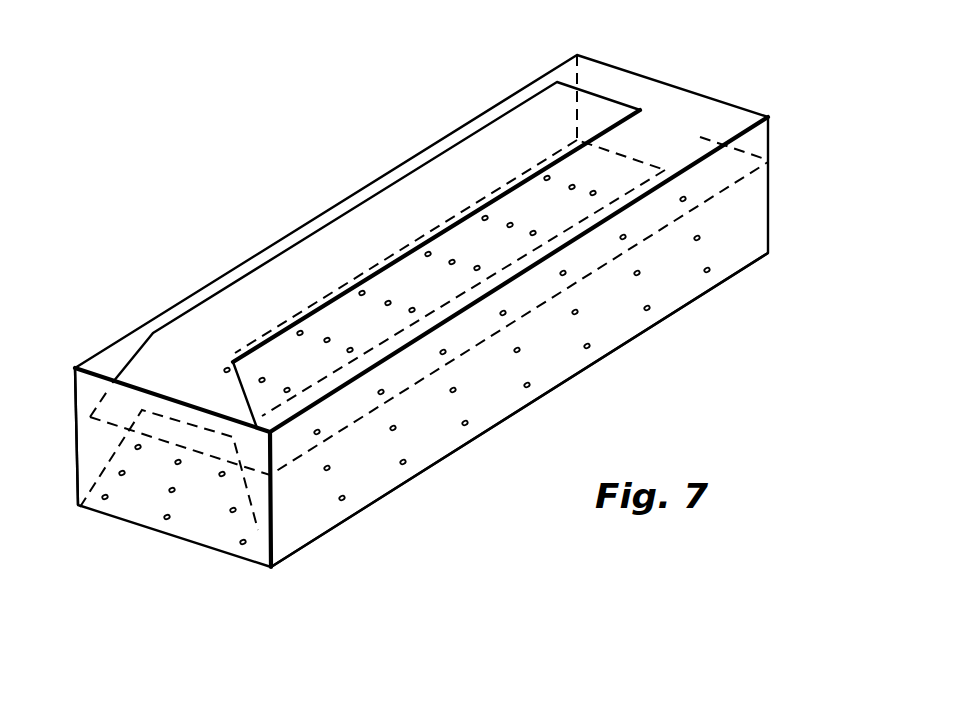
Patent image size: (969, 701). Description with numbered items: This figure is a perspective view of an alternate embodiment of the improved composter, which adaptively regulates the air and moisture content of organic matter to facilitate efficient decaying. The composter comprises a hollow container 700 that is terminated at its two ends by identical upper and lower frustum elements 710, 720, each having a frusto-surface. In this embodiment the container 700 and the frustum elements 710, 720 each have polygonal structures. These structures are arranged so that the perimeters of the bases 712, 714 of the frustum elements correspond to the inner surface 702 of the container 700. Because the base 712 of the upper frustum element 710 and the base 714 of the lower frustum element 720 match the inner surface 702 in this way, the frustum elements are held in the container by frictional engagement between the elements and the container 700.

The container 700 is at (771, 135).
The inner surface of the container 702 is at (78, 402).
The upper frustum element 710 is at (602, 106).
The base of the upper frustum element 712 is at (737, 178).
The base of the lower frustum element 714 is at (685, 308).
The lower frustum element 720 is at (258, 530).